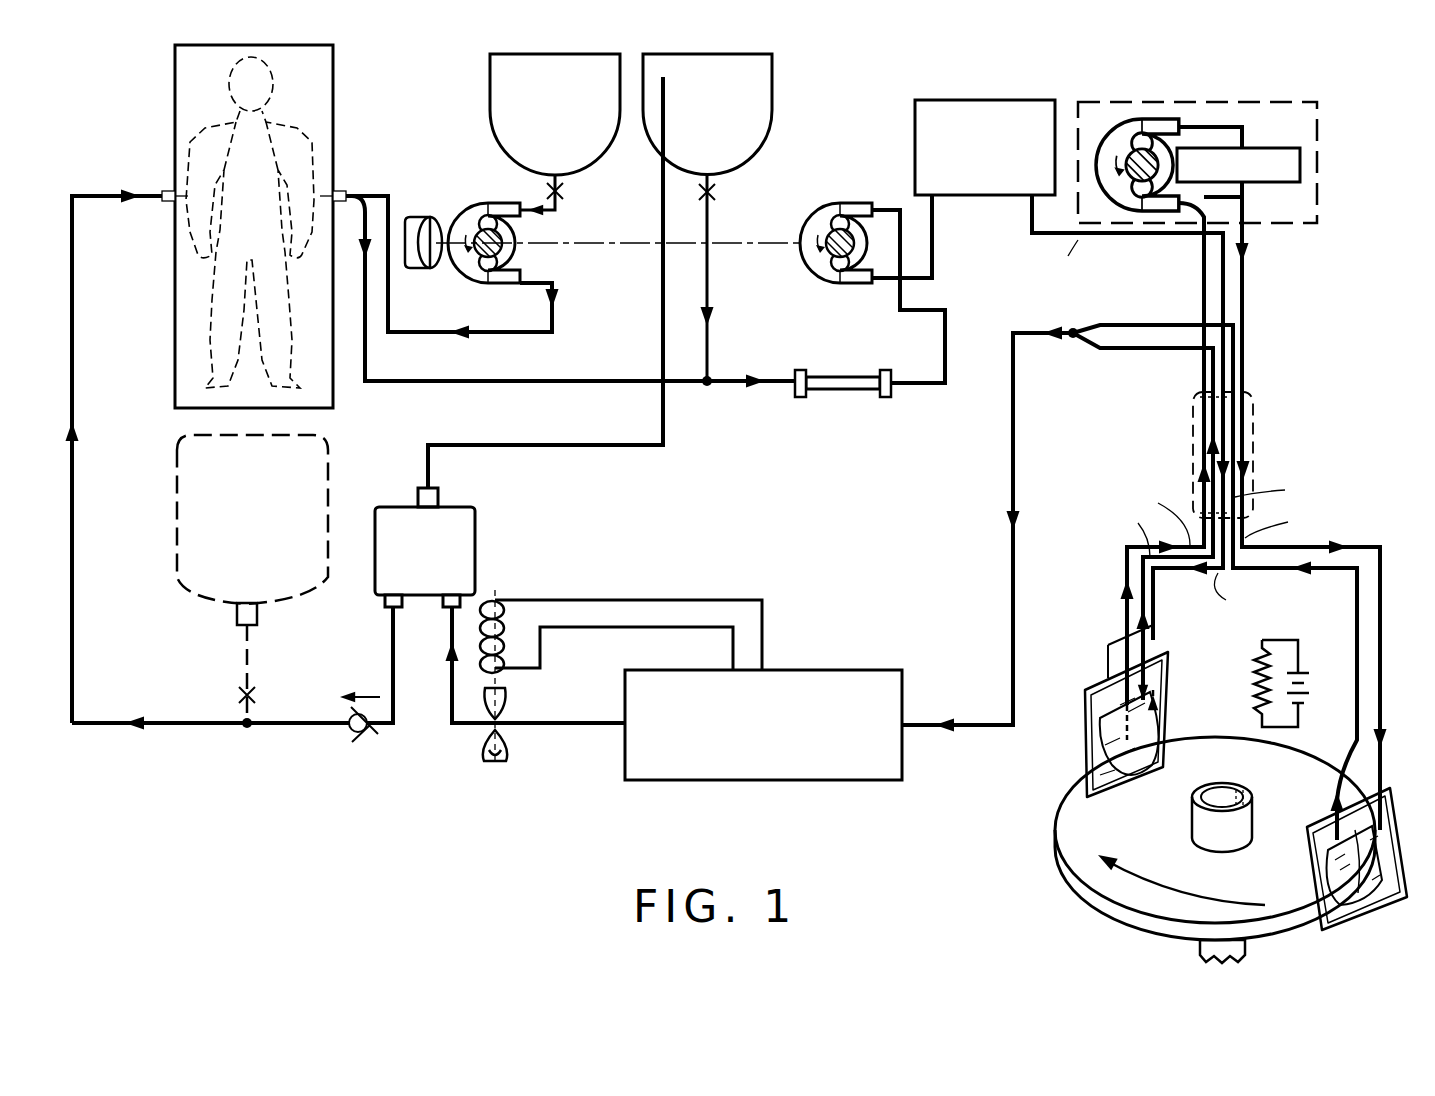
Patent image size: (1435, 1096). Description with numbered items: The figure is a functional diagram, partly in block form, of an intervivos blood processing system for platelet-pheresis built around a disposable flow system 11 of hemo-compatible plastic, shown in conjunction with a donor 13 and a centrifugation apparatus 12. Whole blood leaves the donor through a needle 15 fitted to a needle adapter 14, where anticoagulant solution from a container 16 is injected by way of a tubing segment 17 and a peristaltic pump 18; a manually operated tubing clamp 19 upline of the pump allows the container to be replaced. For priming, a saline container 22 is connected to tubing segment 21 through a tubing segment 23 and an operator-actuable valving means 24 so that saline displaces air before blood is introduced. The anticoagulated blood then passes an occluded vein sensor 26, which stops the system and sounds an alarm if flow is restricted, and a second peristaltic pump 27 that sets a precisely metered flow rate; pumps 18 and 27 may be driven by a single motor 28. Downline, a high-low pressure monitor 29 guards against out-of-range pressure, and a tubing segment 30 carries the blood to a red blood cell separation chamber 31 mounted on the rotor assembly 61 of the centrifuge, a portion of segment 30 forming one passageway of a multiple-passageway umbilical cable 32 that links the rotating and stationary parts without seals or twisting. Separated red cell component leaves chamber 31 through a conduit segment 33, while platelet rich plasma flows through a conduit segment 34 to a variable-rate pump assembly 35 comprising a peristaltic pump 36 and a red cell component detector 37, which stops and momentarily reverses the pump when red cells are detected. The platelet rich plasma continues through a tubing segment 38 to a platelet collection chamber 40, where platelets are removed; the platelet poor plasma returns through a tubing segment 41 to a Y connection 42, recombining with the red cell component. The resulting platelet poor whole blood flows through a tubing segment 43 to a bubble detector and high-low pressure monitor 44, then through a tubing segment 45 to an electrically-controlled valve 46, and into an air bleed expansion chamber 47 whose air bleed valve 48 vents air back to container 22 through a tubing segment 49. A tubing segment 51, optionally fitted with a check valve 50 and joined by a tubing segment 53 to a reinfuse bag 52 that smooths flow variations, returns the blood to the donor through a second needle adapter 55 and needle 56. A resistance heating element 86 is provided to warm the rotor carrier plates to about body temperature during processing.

The disposable flow system 11 is at (730, 395).
The centrifugation apparatus 12 is at (1045, 855).
The donor 13 is at (293, 133).
The needle adapter 14 is at (346, 195).
The needle 15 is at (333, 178).
The anticoagulant solution container 16 is at (512, 137).
The tubing segment 17 is at (486, 334).
The peristaltic pump 18 is at (462, 270).
The tubing clamp 19 is at (562, 193).
The tubing segment 21 is at (583, 384).
The saline solution container 22 is at (765, 100).
The tubing segment 23 is at (709, 278).
The operator-actuable valving means 24 is at (717, 197).
The occluded vein sensor 26 is at (843, 390).
The second peristaltic pump 27 is at (816, 221).
The motor 28 is at (418, 226).
The high-low pressure monitor 29 is at (950, 100).
The tubing segment 30 is at (1125, 240).
The red blood cell separation chamber 31 is at (1090, 760).
The multiple-passageway umbilical cable 32 is at (1255, 426).
The conduit segment 33 is at (1208, 428).
The conduit segment 34 is at (1193, 412).
The variable-rate pump assembly 35 is at (1177, 102).
The peristaltic pump 36 is at (1116, 150).
The RBC component detector 37 is at (1262, 148).
The tubing segment 38 is at (1245, 293).
The platelet collection chamber 40 is at (1392, 808).
The tubing segment 41 is at (1245, 361).
The Y connection 42 is at (1068, 341).
The tubing segment 43 is at (1013, 630).
The bubble detector and high-low pressure monitor 44 is at (830, 670).
The tubing segment 45 is at (565, 726).
The electrically-controlled valve 46 is at (495, 764).
The air bleed expansion chamber 47 is at (478, 530).
The air bleed valve 48 is at (440, 497).
The tubing segment 49 is at (662, 340).
The check valve 50 is at (368, 745).
The tubing segment 51 is at (323, 726).
The reinfuse bag 52 is at (328, 466).
The tubing segment 53 is at (247, 673).
The second needle adapter 55 is at (164, 205).
The needle 56 is at (175, 192).
The rotor assembly 61 is at (1205, 748).
The resistance heating element 86 is at (1283, 665).